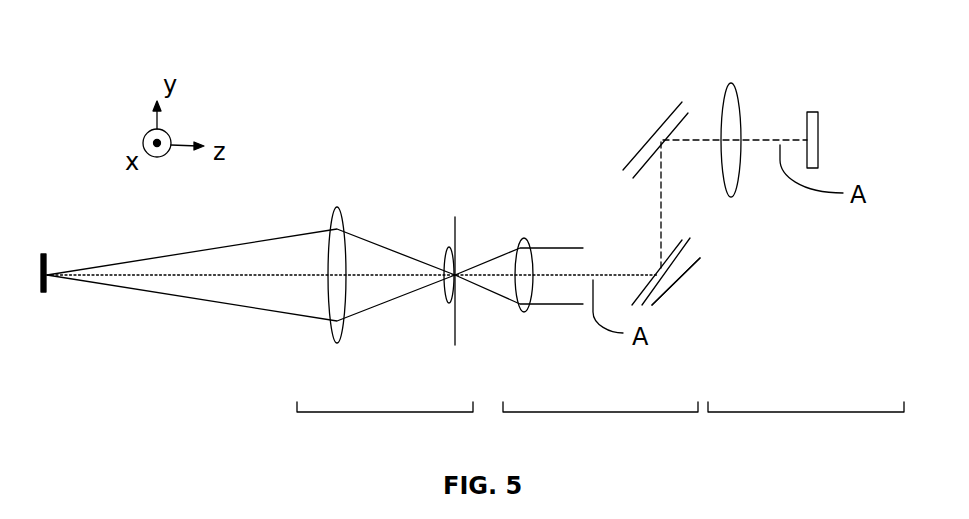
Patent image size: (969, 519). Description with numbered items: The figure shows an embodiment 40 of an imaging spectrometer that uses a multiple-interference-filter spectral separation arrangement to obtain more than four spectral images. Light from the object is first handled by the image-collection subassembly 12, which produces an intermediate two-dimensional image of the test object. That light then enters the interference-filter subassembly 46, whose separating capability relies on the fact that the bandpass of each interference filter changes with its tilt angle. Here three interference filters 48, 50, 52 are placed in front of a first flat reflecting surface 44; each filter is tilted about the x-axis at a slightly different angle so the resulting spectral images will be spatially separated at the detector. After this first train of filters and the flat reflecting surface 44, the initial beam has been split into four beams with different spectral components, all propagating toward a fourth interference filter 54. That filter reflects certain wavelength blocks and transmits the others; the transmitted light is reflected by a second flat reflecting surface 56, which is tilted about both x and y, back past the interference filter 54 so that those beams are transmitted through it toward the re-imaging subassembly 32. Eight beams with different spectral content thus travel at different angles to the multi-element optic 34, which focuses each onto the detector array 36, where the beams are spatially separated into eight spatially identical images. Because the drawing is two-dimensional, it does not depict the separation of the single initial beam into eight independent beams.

The embodiment 40 is at (505, 140).
The image-collection subassembly 12 is at (340, 407).
The interference-filter subassembly 46 is at (580, 412).
The re-imaging subassembly 32 is at (787, 412).
The interference filter 48 is at (655, 269).
The interference filter 50 is at (688, 238).
The interference filter 52 is at (707, 240).
The flat reflecting surface 44 is at (680, 287).
The fourth interference filter 54 is at (662, 147).
The flat reflecting surface 56 is at (643, 141).
The multi-element optic 34 is at (742, 103).
The detector array 36 is at (822, 120).